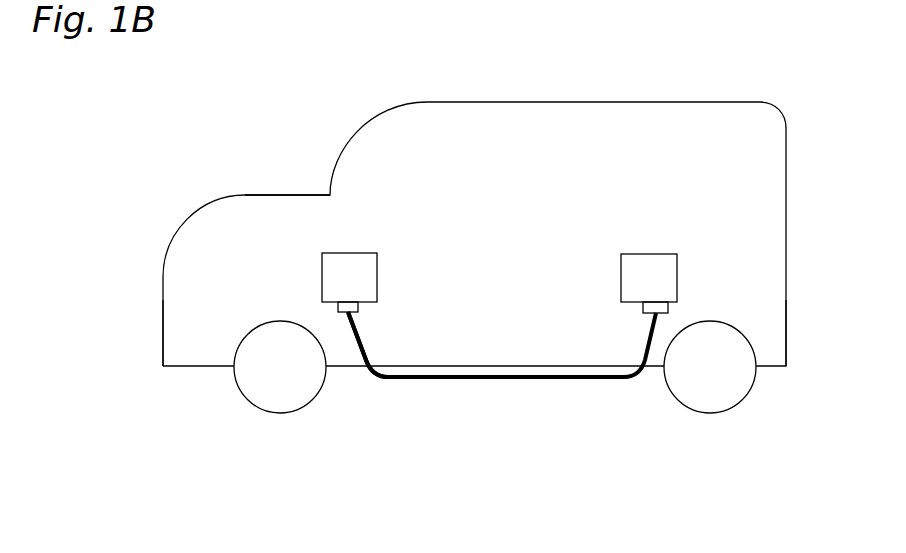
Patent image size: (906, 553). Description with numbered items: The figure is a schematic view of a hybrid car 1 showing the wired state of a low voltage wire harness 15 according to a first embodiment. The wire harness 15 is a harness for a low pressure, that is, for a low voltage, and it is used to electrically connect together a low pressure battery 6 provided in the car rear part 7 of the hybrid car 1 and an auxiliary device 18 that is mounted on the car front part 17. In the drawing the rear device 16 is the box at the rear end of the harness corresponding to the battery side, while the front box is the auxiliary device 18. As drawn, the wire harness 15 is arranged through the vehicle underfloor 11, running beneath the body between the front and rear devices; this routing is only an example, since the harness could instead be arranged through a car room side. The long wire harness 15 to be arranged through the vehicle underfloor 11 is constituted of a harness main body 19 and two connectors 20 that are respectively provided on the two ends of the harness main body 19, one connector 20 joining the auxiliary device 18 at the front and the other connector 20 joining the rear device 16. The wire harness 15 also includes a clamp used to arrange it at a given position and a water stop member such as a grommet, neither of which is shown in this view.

The hybrid car 1 is at (632, 101).
The low pressure battery 6 is at (180, 338).
The car rear part 7 is at (765, 333).
The vehicle underfloor 11 is at (575, 381).
The wire harness 15 is at (407, 381).
The rear device (battery) 16 is at (652, 264).
The car front part 17 is at (302, 210).
The auxiliary device 18 is at (362, 270).
The harness main body 19 is at (370, 352).
The connectors 20 is at (338, 306).